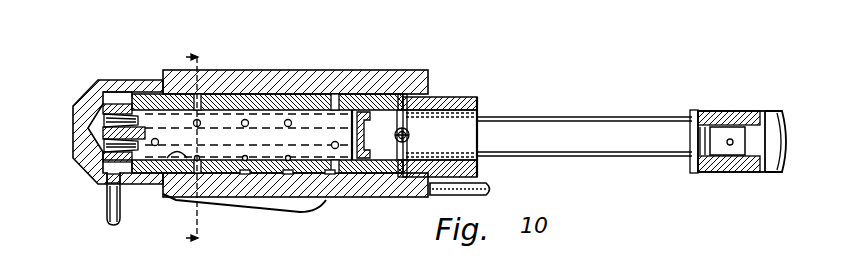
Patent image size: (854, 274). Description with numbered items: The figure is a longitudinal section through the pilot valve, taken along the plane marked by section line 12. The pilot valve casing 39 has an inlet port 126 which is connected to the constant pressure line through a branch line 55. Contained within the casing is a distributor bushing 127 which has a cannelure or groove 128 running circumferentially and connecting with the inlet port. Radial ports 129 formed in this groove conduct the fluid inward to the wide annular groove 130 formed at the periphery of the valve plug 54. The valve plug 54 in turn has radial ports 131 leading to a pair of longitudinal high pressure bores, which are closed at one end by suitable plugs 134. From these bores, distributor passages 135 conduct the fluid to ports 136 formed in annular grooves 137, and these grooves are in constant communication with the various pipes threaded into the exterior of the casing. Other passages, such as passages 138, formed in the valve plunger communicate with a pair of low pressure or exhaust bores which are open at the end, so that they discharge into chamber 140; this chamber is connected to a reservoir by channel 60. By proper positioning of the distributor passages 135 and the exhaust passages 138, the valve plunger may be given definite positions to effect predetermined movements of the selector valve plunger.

The section line 12- 12 is at (203, 147).
The pilot valve casing 39 is at (408, 128).
The valve plug 54 is at (558, 158).
The branch line 55 is at (488, 184).
The channel 60 is at (107, 203).
The inlet port 126 is at (435, 100).
The distributor bushing 127 is at (470, 98).
The cannelure or groove 128 is at (402, 175).
The radial ports 129 is at (370, 199).
The wide annular groove 130 is at (392, 115).
The radial ports 131 is at (386, 112).
The plugs 134 is at (88, 163).
The distributor passages 135 is at (243, 120).
The ports 136 is at (163, 80).
The annular grooves 137 is at (196, 93).
The passages 138 is at (153, 187).
The chamber 140 is at (95, 128).